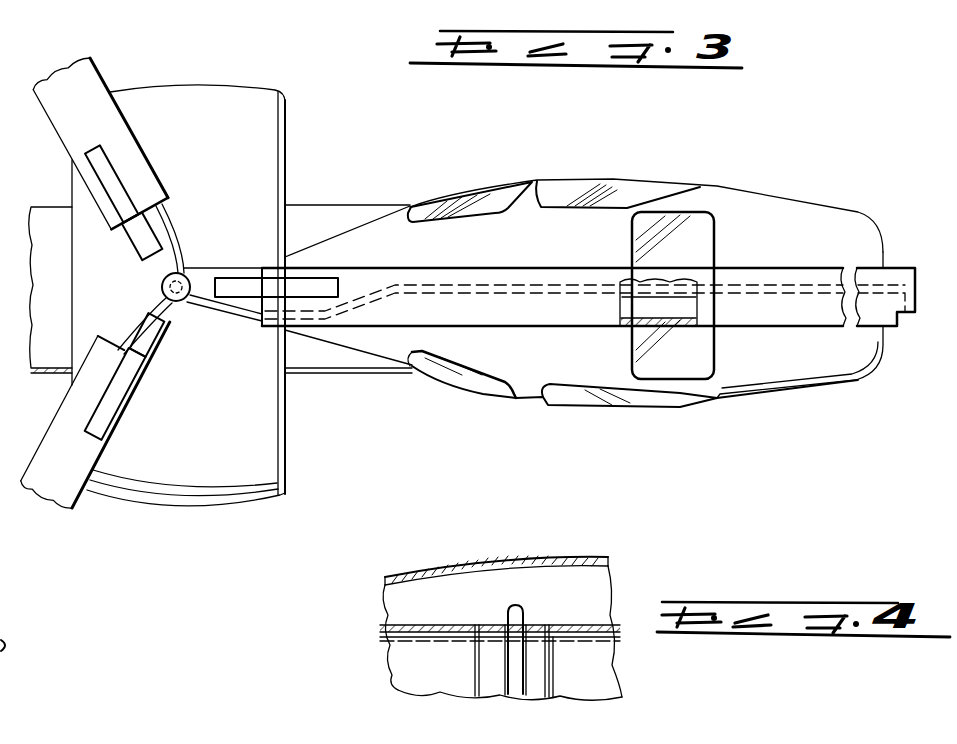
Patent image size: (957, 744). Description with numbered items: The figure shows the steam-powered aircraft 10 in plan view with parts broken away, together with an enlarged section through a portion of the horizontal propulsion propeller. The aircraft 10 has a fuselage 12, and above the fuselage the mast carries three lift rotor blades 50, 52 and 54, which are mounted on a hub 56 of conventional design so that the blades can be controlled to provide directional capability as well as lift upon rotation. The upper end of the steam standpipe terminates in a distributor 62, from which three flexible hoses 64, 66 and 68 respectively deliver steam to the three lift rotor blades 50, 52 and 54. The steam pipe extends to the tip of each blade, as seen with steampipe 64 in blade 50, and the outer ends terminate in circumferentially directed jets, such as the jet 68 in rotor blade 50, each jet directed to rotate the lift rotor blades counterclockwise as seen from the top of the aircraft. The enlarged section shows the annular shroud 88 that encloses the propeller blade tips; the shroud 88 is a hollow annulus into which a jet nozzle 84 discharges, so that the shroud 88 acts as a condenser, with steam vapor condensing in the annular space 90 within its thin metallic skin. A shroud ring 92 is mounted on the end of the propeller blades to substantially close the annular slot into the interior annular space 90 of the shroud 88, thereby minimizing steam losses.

In FIG. 3, the steam-powered aircraft 10 is at (792, 191).
In FIG. 3, the fuselage 12 is at (777, 398).
In FIG. 3, the lift rotor blade 50 is at (777, 277).
In FIG. 3, the lift rotor blade 52 is at (74, 503).
In FIG. 3, the lift rotor blade 54 is at (100, 83).
In FIG. 3, the hub 56 is at (200, 270).
In FIG. 3, the distributor 62 is at (161, 285).
In FIG. 3, the flexible hose / steampipe 64 is at (233, 310).
In FIG. 3, the flexible hose 66 is at (133, 326).
In FIG. 3, the flexible hose / jet 68 is at (173, 231).
In FIG. 4, the jet nozzle 84 is at (521, 619).
In FIG. 3, the annular shroud 88 is at (279, 92).
In FIG. 4, the annular shroud 88 is at (447, 566).
In FIG. 4, the annular space 90 is at (513, 576).
In FIG. 4, the shroud ring 92 is at (488, 625).